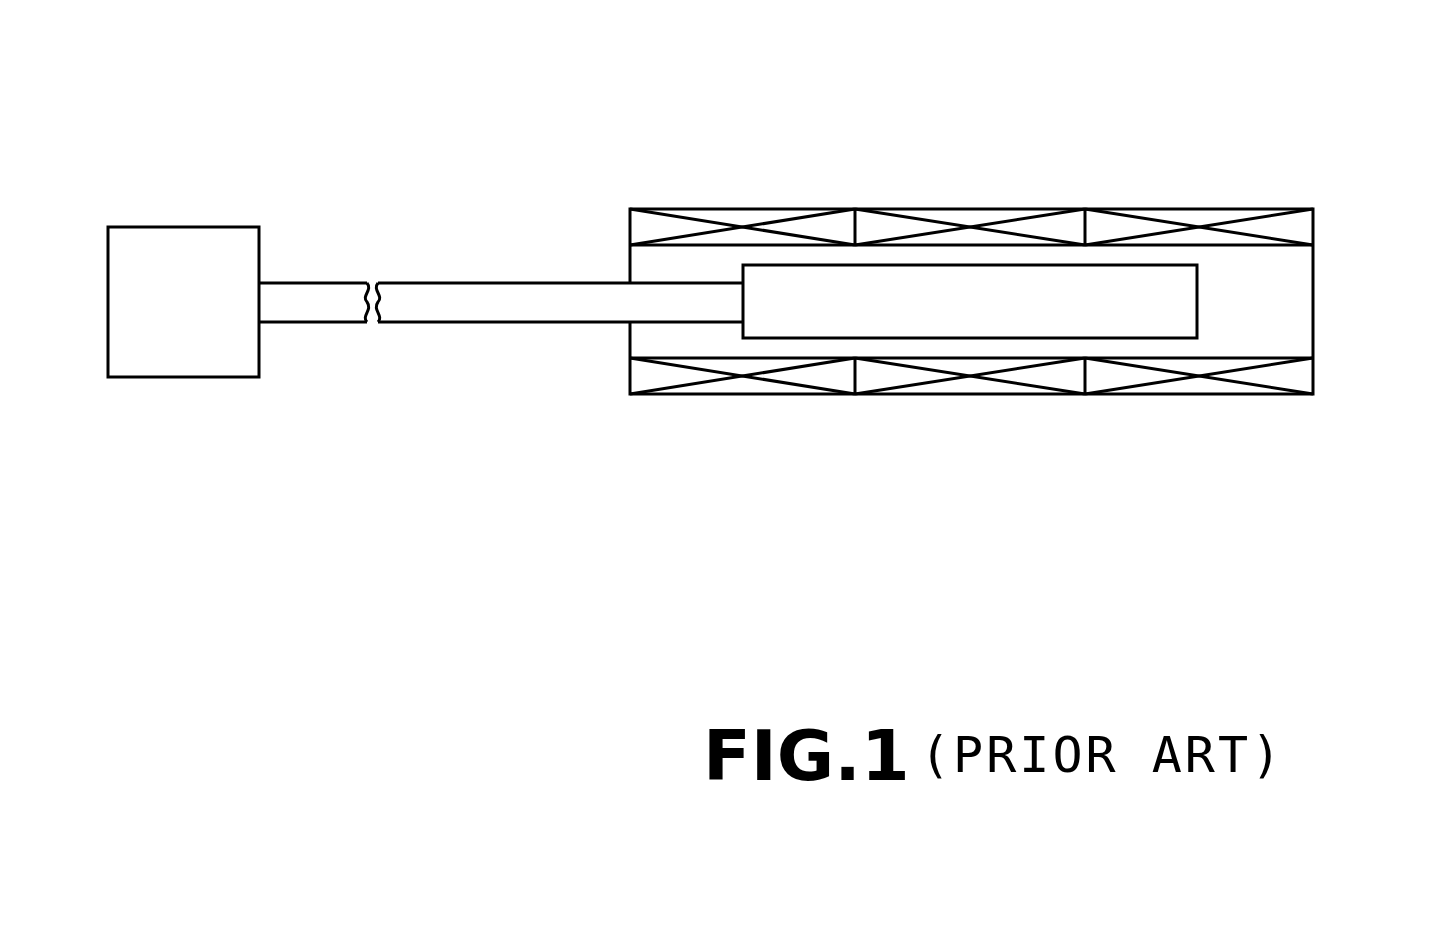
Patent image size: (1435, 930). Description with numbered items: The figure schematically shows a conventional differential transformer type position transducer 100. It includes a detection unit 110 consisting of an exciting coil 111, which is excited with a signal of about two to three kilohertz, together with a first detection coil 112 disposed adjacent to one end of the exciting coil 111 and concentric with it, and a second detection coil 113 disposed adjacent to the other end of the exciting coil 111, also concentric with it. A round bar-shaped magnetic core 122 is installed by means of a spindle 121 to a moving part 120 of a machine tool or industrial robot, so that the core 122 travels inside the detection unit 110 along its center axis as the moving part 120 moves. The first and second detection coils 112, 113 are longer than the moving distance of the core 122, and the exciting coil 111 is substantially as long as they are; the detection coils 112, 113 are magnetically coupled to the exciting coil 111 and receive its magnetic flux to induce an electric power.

The differential transformer type position transducer 100 is at (1024, 144).
The detection unit 110 is at (1235, 476).
The exciting coil 111 is at (965, 395).
The first detection coil 112 is at (745, 395).
The second detection coil 113 is at (1200, 395).
The moving part 120 is at (180, 378).
The spindle 121 is at (458, 290).
The magnetic core 122 is at (1177, 303).